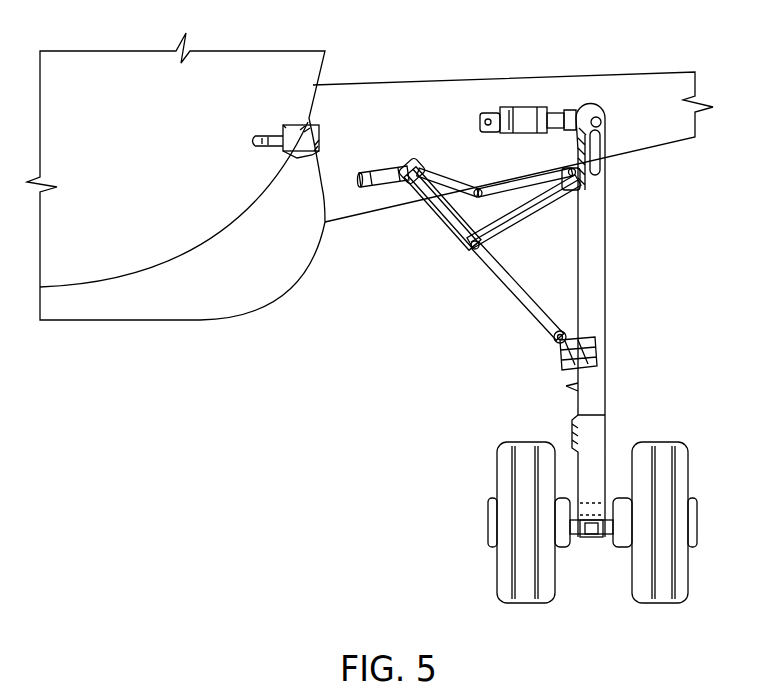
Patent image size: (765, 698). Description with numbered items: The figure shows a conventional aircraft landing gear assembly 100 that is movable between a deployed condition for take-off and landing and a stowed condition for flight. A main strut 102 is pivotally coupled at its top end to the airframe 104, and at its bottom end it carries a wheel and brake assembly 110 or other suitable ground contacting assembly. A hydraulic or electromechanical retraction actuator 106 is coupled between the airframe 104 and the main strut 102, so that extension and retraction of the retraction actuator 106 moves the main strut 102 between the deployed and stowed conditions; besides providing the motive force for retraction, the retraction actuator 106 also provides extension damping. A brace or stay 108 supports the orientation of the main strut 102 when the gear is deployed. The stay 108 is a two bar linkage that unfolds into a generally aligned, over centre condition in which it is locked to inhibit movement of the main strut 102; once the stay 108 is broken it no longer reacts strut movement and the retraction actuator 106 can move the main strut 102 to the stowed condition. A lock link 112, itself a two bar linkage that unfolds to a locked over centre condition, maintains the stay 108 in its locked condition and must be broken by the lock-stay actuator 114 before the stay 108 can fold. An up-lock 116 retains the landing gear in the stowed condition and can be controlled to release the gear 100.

The aircraft landing gear assembly 100 is at (634, 88).
The main strut 102 is at (608, 250).
The airframe 104 is at (382, 95).
The retraction actuator 106 is at (523, 117).
The stay 108 is at (515, 302).
The wheel and brake assembly 110 is at (610, 443).
The lock link 112 is at (523, 227).
The lock-stay actuator 114 is at (470, 186).
The up-lock 116 is at (277, 128).